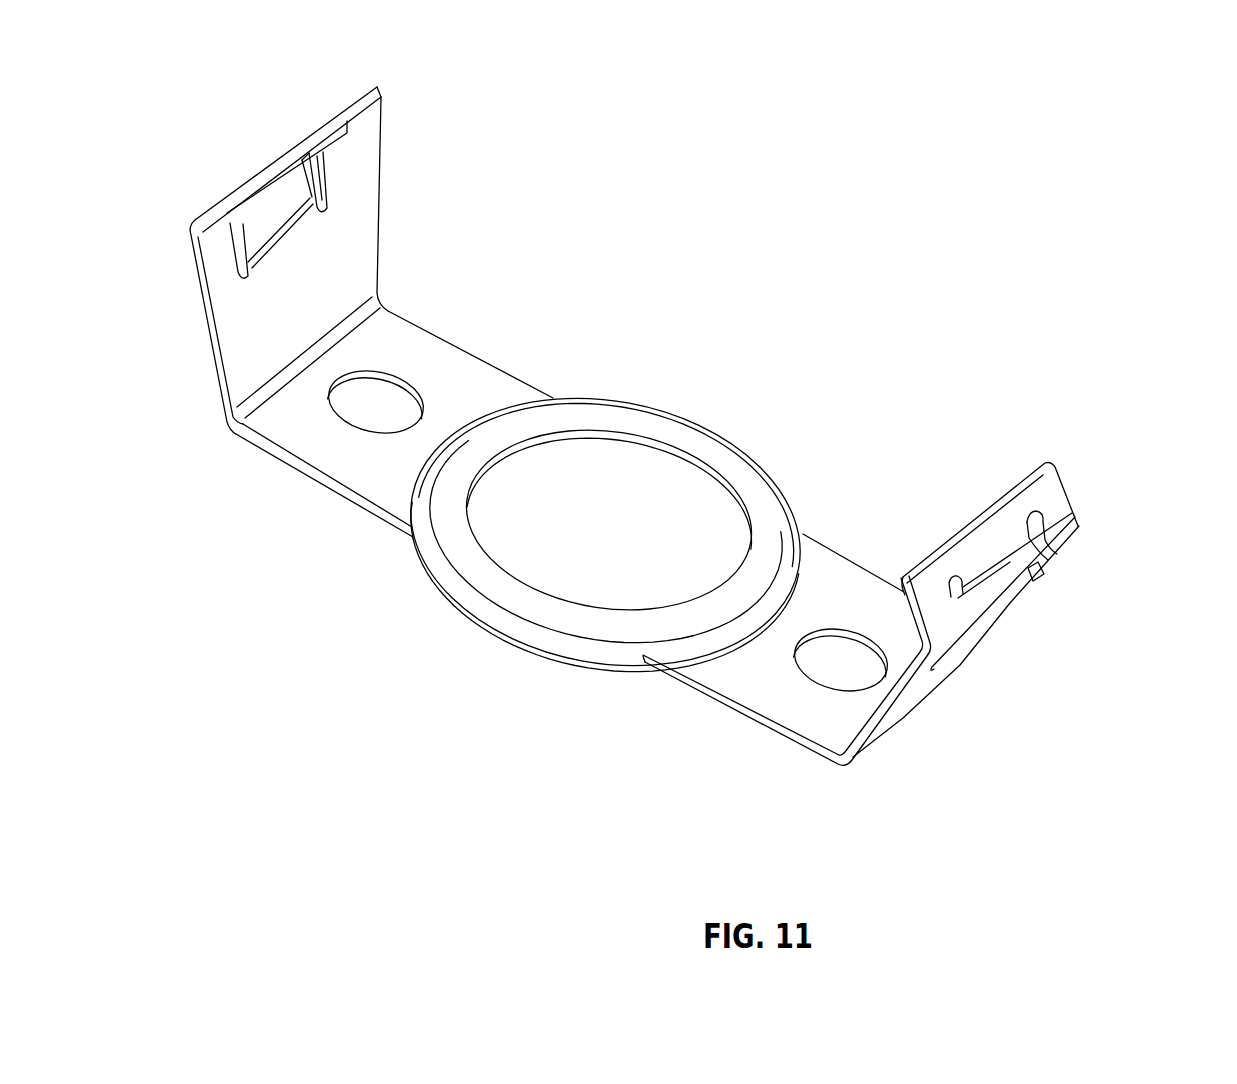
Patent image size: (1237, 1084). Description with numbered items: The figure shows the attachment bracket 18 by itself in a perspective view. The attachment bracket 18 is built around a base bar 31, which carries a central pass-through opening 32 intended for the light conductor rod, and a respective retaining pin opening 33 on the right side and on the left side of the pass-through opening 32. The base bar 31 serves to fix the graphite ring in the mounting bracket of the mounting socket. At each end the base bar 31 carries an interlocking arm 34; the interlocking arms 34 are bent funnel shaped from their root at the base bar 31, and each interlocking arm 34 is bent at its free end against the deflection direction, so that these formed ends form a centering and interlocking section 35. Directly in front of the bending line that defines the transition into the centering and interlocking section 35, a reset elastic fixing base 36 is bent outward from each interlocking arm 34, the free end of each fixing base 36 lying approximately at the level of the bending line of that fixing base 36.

The attachment bracket 18 is at (937, 233).
The base bar 31 is at (703, 735).
The central pass-through opening 32 is at (638, 500).
The retaining pin opening 33 is at (385, 405).
The interlocking arm 34 is at (383, 235).
The centering and interlocking section 35 is at (407, 117).
The reset elastic fixing base 36 is at (277, 203).